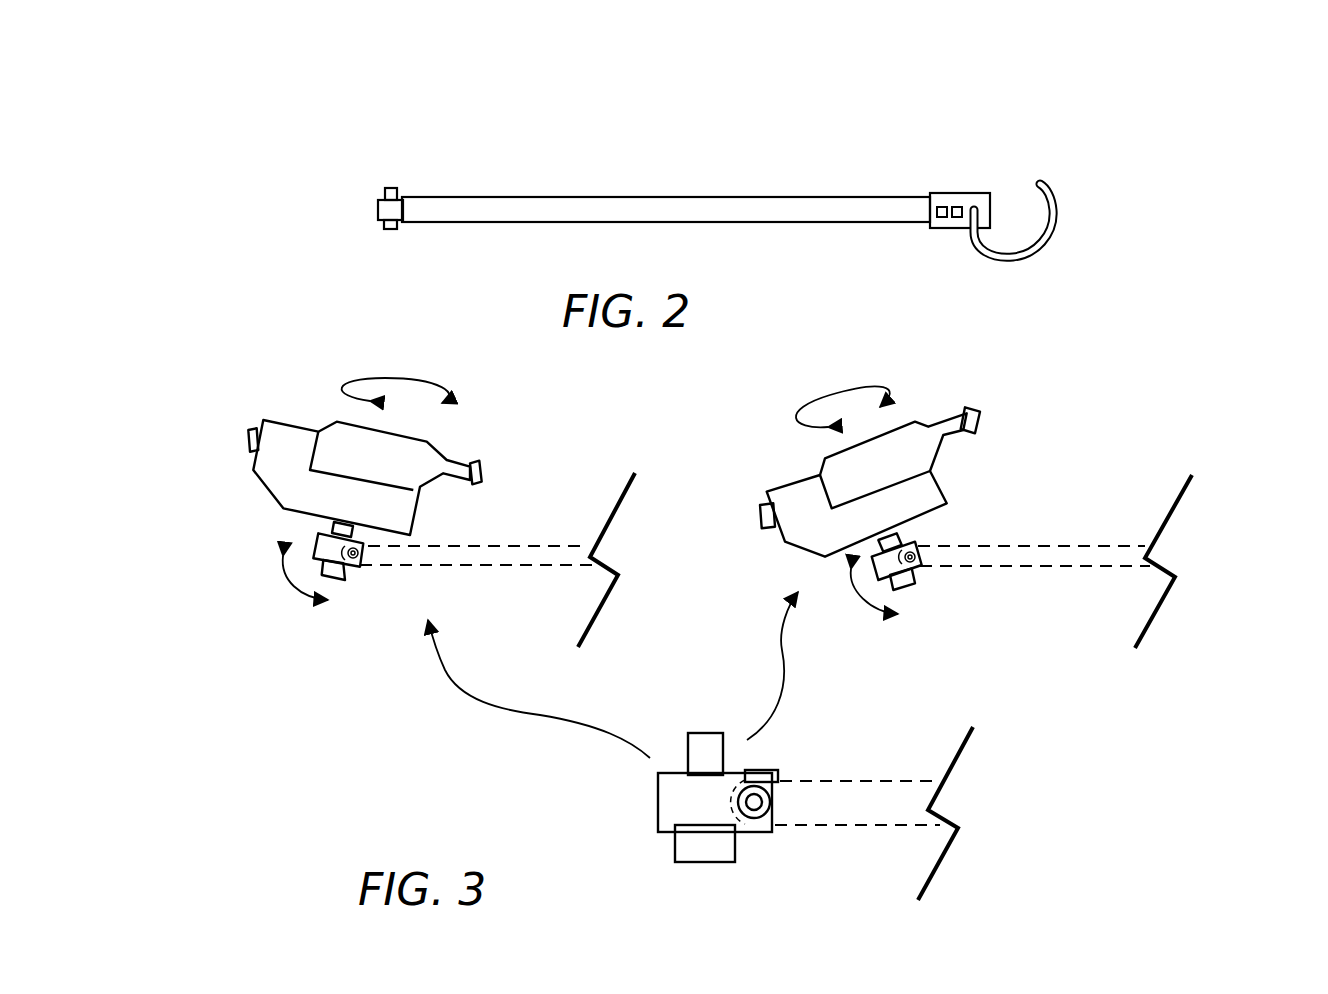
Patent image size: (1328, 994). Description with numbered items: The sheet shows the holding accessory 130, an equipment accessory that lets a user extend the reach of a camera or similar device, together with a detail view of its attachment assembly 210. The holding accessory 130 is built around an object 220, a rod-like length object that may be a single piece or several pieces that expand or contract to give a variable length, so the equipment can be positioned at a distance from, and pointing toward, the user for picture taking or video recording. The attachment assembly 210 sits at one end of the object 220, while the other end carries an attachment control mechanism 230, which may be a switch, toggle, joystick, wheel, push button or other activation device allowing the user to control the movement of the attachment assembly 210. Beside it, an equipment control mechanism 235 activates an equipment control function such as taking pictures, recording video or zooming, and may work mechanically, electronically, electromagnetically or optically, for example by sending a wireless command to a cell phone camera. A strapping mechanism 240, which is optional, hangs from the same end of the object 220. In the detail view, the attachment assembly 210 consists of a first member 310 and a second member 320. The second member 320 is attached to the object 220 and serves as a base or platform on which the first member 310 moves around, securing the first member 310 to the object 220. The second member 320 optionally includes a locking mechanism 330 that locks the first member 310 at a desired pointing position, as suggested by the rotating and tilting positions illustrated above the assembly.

In FIG. 2, the holding accessory 130 is at (1120, 72).
In FIG. 2, the attachment assembly 210 is at (380, 207).
In FIG. 3, the attachment assembly 210 is at (1205, 403).
In FIG. 2, the object 220 is at (483, 205).
In FIG. 2, the attachment control mechanism 230 is at (995, 162).
In FIG. 2, the equipment control mechanism 235 is at (940, 220).
In FIG. 2, the strapping mechanism 240 is at (1057, 205).
In FIG. 3, the first member 310 is at (710, 738).
In FIG. 3, the second member 320 is at (727, 845).
In FIG. 3, the locking mechanism 330 is at (765, 775).